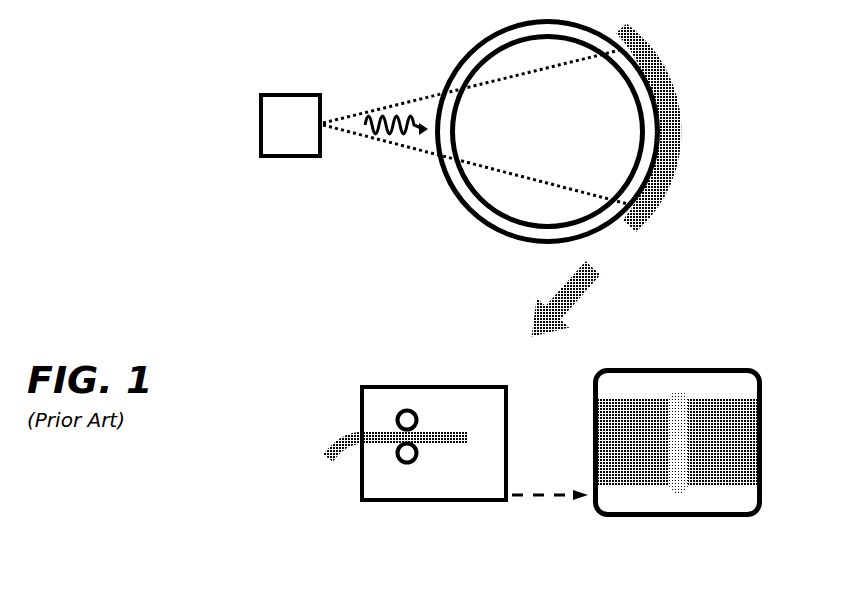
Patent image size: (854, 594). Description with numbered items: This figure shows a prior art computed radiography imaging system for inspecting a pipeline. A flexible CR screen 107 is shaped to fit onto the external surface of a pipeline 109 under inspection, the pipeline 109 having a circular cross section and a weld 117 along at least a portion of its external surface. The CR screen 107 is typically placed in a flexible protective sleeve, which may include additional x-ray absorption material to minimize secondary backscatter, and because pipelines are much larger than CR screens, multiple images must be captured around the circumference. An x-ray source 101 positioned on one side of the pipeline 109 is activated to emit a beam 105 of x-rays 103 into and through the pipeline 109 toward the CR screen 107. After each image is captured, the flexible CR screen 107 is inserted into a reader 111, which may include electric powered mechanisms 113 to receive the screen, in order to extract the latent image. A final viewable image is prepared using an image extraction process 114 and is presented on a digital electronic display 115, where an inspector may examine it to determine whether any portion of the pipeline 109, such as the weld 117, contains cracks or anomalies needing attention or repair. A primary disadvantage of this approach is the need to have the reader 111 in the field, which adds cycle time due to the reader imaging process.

The x-ray source 101 is at (257, 122).
The x-rays 103 is at (392, 113).
The beam 105 is at (397, 143).
The flexible CR screen 107 is at (668, 79).
The pipeline 109 is at (467, 205).
The reader 111 is at (402, 385).
The electric powered mechanisms 113 is at (405, 462).
The image extraction process 114 is at (557, 497).
The digital electronic display 115 is at (718, 368).
The weld 117 is at (682, 479).